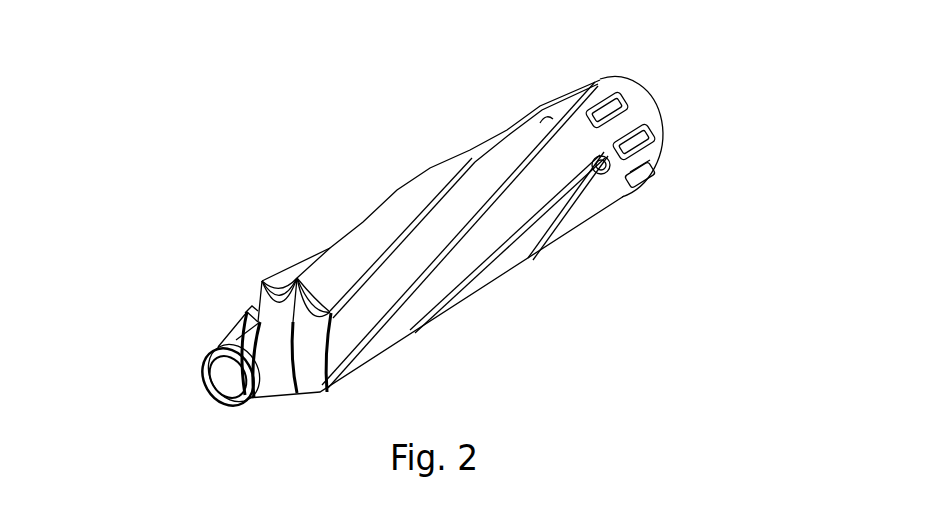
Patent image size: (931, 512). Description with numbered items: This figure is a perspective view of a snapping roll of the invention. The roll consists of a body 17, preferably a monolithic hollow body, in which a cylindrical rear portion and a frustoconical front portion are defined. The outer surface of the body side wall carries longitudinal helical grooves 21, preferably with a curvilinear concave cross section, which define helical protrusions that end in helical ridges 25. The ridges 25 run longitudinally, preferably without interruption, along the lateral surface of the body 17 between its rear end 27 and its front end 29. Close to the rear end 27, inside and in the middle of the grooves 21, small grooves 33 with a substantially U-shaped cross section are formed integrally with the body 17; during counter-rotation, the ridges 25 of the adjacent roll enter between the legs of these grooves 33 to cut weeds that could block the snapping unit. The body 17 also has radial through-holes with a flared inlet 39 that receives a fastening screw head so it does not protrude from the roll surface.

The body 17 is at (345, 189).
The longitudinal helical grooves 21 is at (513, 143).
The helical ridges 25 is at (262, 300).
The rear end 27 is at (647, 100).
The front end 29 is at (207, 375).
The small grooves 33 is at (607, 92).
The flared inlet 39 is at (600, 175).